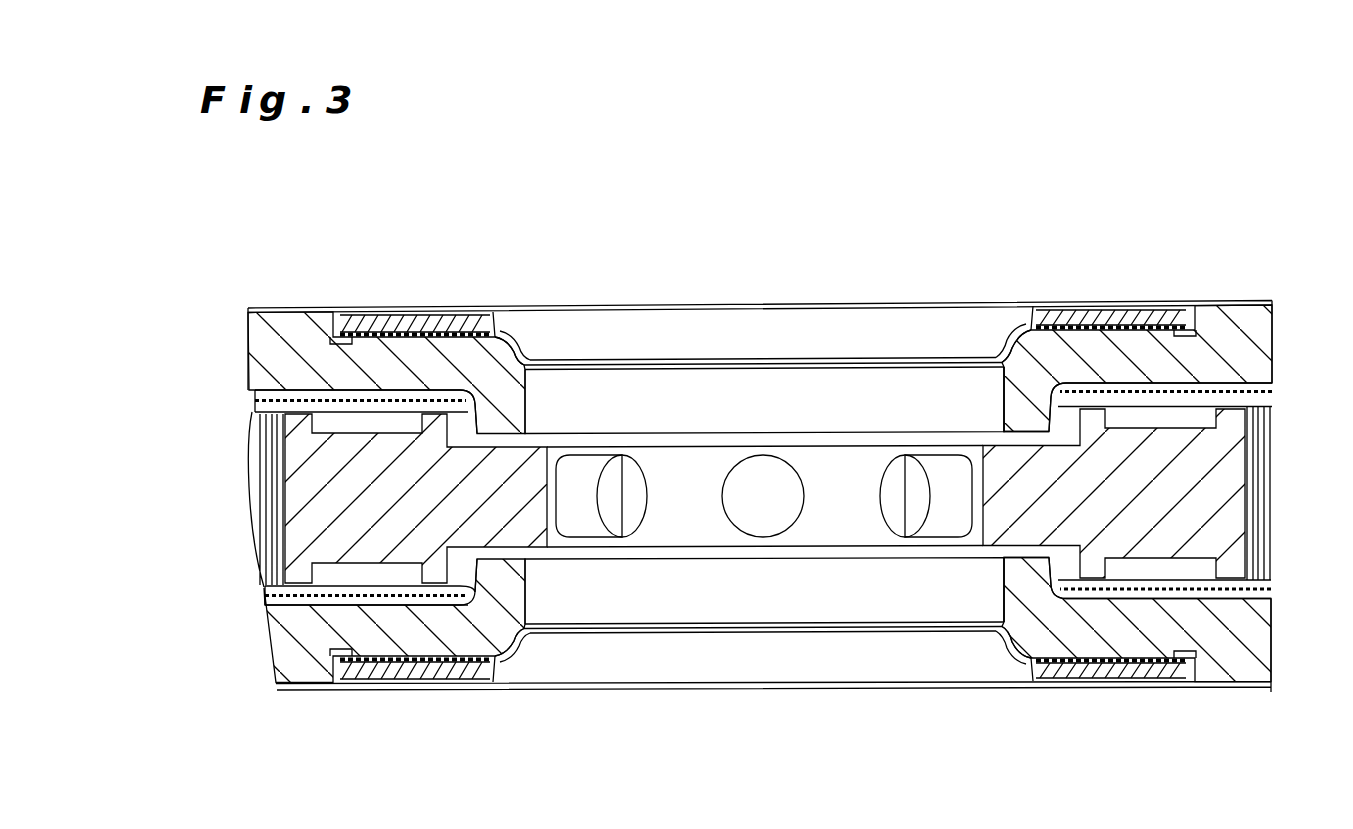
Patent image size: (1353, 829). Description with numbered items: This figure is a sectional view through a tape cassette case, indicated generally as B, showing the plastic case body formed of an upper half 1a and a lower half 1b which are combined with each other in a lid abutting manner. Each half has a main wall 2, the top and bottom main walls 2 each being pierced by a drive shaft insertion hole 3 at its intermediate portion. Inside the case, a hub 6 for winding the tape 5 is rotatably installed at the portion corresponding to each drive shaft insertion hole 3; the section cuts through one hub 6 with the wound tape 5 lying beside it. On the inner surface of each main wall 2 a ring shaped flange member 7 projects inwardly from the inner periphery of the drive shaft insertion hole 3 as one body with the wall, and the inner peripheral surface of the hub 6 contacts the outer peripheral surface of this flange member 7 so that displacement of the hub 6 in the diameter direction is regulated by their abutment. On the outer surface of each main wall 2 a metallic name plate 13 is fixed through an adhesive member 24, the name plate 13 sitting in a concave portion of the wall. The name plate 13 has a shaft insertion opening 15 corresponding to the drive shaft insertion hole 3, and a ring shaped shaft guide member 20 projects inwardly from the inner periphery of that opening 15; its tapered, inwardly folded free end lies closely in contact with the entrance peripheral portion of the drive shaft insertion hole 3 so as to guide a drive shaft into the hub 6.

The bearing assembly B is at (466, 263).
The upper half 1a is at (1268, 339).
The lower half 1b is at (1265, 643).
The main wall 2 is at (285, 315).
The drive shaft insertion hole 3 is at (823, 385).
The tape 5 is at (262, 495).
The hub 6 is at (1228, 484).
The ring shaped flange member 7 is at (1008, 393).
The name plate 13 is at (1086, 304).
The shaft insertion opening 15 is at (578, 338).
The shaft guide member 20 is at (1027, 328).
The adhesive member 24 is at (388, 314).